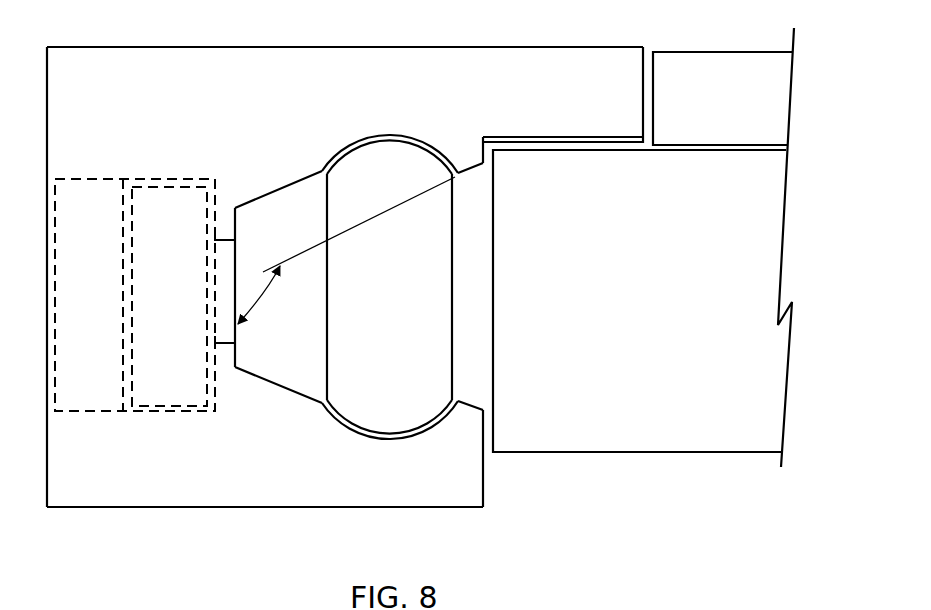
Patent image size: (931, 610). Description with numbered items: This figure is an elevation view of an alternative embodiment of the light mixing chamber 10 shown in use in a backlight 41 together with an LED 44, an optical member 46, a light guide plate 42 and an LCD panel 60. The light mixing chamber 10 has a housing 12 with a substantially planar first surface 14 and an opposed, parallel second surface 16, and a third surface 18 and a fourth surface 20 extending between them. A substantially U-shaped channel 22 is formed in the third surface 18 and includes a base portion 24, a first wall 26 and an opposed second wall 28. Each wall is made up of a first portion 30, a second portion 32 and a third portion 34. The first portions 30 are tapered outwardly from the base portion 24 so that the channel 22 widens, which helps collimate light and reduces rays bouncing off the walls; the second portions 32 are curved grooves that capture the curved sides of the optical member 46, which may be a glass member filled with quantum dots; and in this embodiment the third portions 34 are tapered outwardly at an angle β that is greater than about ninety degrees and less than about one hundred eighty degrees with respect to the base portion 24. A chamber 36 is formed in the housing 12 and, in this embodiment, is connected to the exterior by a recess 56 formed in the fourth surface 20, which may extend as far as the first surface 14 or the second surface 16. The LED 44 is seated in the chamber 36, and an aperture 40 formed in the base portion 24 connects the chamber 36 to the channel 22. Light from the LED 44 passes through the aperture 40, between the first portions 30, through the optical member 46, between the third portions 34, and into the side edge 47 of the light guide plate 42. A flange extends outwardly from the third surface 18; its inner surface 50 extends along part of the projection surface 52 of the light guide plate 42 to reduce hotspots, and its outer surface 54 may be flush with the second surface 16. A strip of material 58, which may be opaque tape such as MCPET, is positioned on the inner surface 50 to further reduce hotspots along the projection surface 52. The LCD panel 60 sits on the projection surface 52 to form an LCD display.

The light mixing chamber 10 is at (446, 44).
The housing 12 is at (119, 114).
The first surface 14 is at (470, 508).
The second surface 16 is at (278, 46).
The third surface 18 is at (484, 486).
The fourth surface 20 is at (47, 467).
The channel 22 is at (312, 335).
The base portion 24 is at (236, 355).
The first wall 26 is at (302, 181).
The second wall 28 is at (333, 414).
The first portion 30 is at (255, 201).
The second portion 32 is at (387, 136).
The third portion 34 is at (470, 172).
The chamber 36 is at (173, 182).
The aperture 40 is at (233, 343).
The backlight 41 is at (690, 34).
The light guide plate 42 is at (664, 374).
The LED 44 is at (182, 369).
The optical member 46 is at (404, 340).
The side edge 47 is at (493, 253).
The inner surface 50 is at (515, 138).
The projection surface 52 is at (614, 146).
The outer surface 54 is at (574, 46).
The recess 56 is at (80, 181).
The strip of material 58 is at (573, 142).
The LCD panel 60 is at (732, 105).